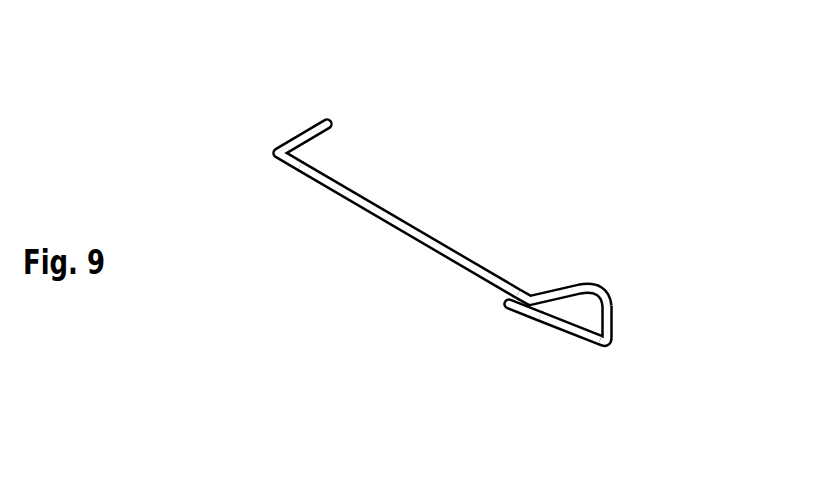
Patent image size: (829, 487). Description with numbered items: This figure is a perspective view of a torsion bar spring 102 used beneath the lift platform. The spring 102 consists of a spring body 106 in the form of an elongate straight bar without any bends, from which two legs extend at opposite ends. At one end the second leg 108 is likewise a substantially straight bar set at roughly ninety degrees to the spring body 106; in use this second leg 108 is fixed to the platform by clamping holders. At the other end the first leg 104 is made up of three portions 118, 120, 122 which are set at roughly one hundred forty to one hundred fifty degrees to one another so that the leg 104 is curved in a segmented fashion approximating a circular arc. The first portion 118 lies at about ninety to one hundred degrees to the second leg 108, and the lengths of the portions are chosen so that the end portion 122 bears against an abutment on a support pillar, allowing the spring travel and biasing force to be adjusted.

The torsion bar spring 102 is at (489, 157).
The first leg 104 is at (606, 279).
The spring body 106 is at (407, 249).
The second leg 108 is at (312, 117).
The first portion 118 is at (616, 318).
The second portion 120 is at (584, 308).
The third portion 122 is at (522, 313).